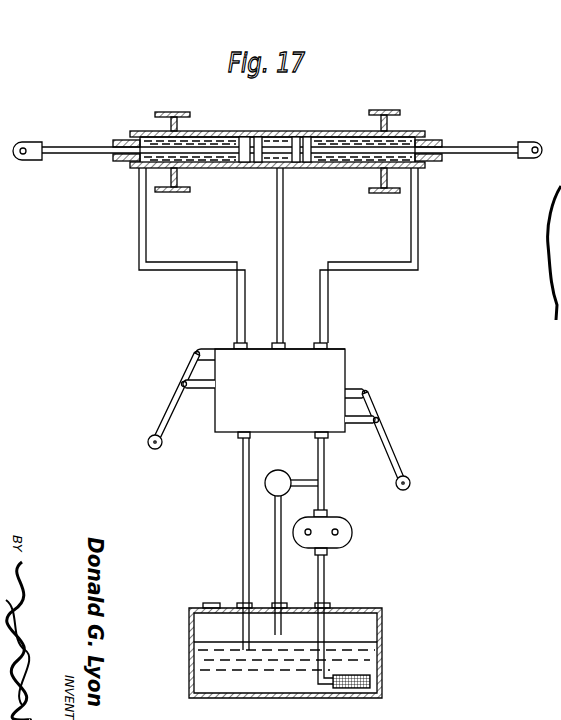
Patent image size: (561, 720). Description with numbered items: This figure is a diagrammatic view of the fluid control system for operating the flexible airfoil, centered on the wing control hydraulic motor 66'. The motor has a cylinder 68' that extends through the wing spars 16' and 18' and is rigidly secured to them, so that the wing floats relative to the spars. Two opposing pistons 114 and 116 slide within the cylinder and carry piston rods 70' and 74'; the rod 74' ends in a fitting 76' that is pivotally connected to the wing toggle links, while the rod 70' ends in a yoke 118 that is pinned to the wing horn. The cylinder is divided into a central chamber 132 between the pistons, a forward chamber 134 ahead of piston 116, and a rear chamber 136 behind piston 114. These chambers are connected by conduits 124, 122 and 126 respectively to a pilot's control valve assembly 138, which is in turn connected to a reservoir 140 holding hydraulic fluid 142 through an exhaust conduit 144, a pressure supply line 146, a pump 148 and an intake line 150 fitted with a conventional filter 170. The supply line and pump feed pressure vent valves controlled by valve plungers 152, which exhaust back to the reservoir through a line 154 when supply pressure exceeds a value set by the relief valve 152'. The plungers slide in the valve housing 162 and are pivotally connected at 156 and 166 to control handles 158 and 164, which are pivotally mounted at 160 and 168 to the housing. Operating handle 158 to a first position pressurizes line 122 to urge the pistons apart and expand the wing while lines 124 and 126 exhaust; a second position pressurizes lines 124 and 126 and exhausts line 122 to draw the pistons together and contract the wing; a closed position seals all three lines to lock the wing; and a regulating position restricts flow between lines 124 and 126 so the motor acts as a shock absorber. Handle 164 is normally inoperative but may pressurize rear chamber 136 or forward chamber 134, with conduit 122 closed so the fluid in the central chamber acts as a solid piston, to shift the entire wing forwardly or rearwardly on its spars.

The wing spar 16' is at (164, 136).
The wing spar 18' is at (384, 135).
The hydraulic motor 66' is at (277, 174).
The cylinder 68' is at (277, 113).
The piston rod 70' is at (384, 134).
The piston rod 74' is at (140, 132).
The fitting 76' is at (26, 137).
The piston 114 is at (306, 137).
The piston 116 is at (256, 136).
The yoke 118 is at (522, 142).
The pressure line 122 is at (280, 220).
The pressure line 124 is at (138, 215).
The pressure line 126 is at (420, 212).
The central chamber 132 is at (277, 130).
The forward chamber 134 is at (197, 142).
The rear chamber 136 is at (406, 141).
The control valve assembly 138 is at (343, 341).
The reservoir 140 is at (382, 626).
The hydraulic fluid 142 is at (370, 660).
The exhaust conduit 144 is at (242, 497).
The pressure supply line 146 is at (323, 458).
The pump 148 is at (348, 528).
The intake line 150 is at (327, 570).
The valve plunger 152 is at (371, 375).
The relief valve 152' is at (287, 467).
The line 154 is at (283, 553).
The pivotal connection 156 is at (372, 395).
The control handle 158 is at (388, 450).
The pivot 160 is at (382, 420).
The valve housing 162 is at (343, 360).
The control handle 164 is at (163, 410).
The pivotal connection 166 is at (182, 382).
The pivot 168 is at (197, 348).
The filter 170 is at (370, 688).